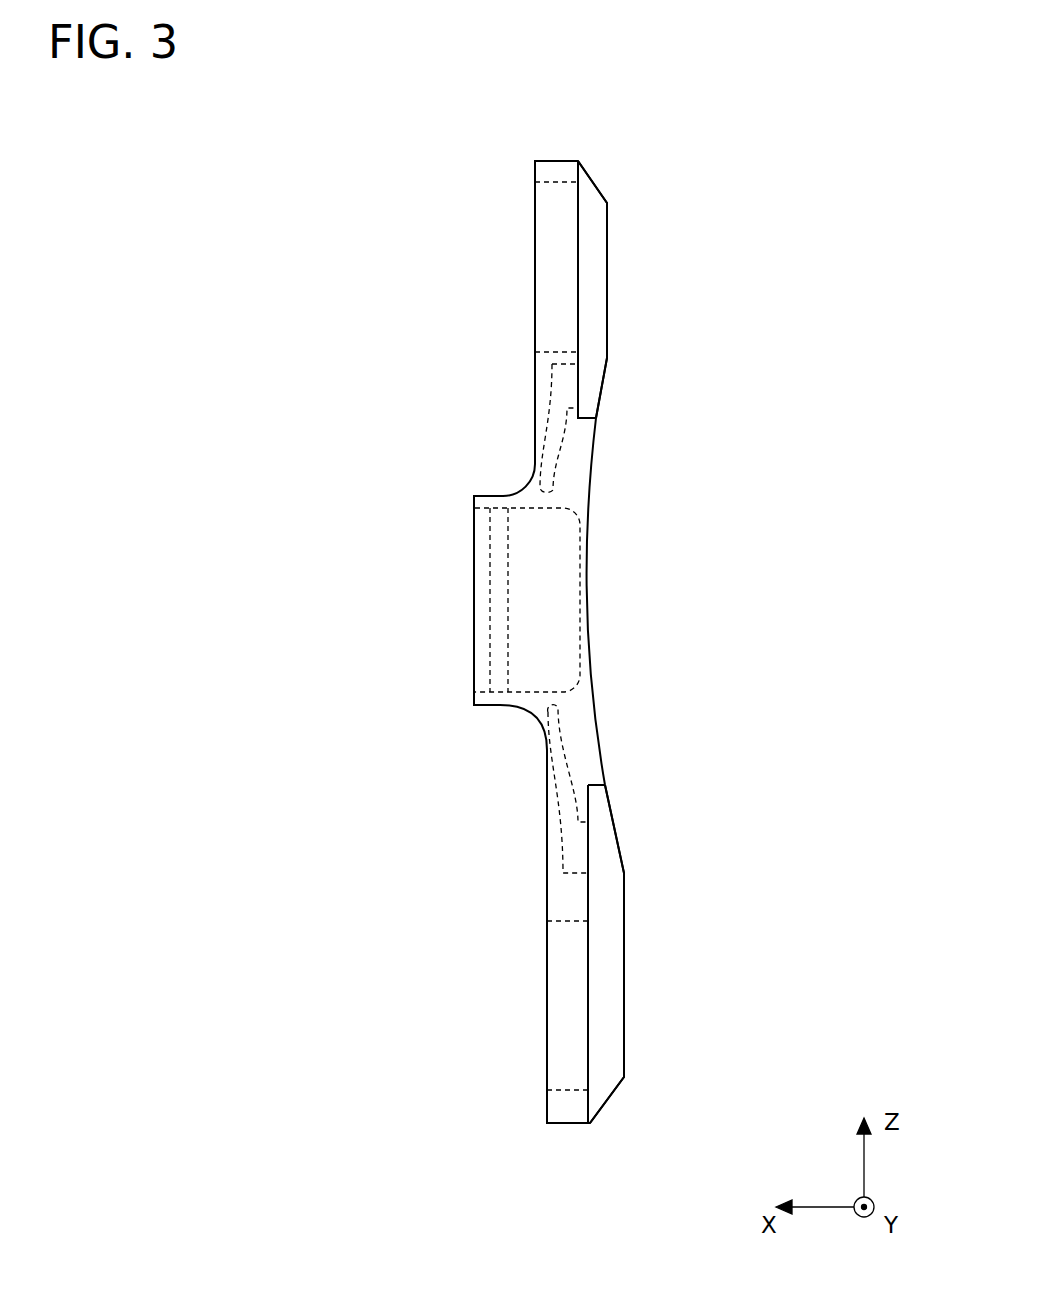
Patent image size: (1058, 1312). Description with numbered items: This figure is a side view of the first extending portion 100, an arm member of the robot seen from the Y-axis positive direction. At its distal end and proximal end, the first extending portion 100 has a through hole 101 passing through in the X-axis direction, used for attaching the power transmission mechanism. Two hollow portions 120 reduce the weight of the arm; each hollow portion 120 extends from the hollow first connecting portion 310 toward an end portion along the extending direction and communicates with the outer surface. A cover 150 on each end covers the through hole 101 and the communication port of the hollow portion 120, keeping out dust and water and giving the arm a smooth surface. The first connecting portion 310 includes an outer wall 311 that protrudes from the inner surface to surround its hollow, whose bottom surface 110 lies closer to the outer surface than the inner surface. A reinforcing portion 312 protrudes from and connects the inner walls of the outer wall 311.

The first extending portion 100 is at (704, 474).
The through hole 101 is at (514, 256).
The bottom surface 110 is at (552, 592).
The hollow portion 120 is at (544, 377).
The cover 150 is at (597, 282).
The first connecting portion 310 is at (465, 480).
The outer wall 311 is at (498, 502).
The reinforcing portion 312 is at (497, 590).